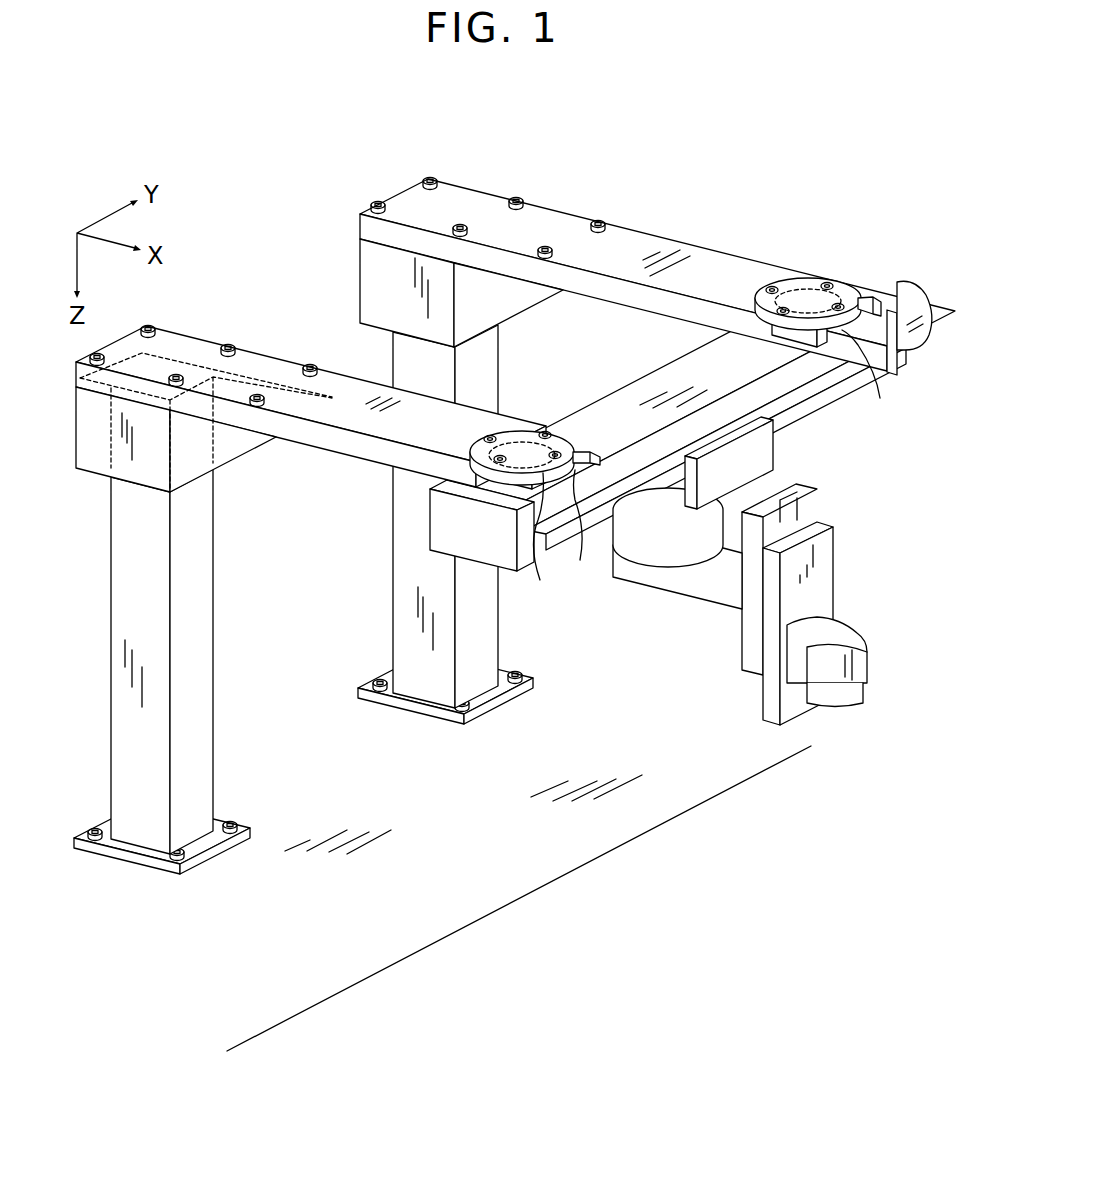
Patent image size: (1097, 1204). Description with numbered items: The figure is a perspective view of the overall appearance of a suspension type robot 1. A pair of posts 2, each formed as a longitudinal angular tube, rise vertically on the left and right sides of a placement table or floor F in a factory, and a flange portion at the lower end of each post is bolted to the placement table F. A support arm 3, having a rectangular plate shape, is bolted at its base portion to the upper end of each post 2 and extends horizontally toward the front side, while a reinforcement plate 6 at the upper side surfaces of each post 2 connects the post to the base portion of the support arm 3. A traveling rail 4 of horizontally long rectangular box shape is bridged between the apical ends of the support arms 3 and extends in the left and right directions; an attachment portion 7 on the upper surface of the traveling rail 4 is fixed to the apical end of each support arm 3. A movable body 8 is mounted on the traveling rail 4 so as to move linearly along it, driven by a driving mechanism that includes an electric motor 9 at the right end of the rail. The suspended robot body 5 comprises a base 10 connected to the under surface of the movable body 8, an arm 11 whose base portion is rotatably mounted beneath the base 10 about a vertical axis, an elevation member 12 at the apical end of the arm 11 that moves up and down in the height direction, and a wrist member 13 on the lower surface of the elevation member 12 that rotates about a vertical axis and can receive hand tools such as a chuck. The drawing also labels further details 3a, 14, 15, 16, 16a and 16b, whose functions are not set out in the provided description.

The suspension type robot 1 is at (707, 170).
The post 2 is at (121, 738).
The support arm 3 is at (333, 420).
The beam end flanges 3a is at (497, 433).
The traveling rail 4 is at (635, 388).
The robot body 5 is at (744, 620).
The reinforcement plate 6 is at (127, 472).
The attachment portion 7 is at (567, 428).
The movable body 8 is at (767, 458).
The electric motor 9 is at (908, 296).
The base 10 is at (633, 537).
The arm 11 is at (663, 578).
The elevation member 12 is at (836, 566).
The wrist member 13 is at (845, 702).
The cables 14 is at (719, 470).
The bolt holes 15 is at (513, 437).
The stopper blocks 16 is at (476, 480).
The stopper cable 16a is at (581, 529).
The stopper tabs 16b is at (603, 438).
The placement table F is at (406, 941).